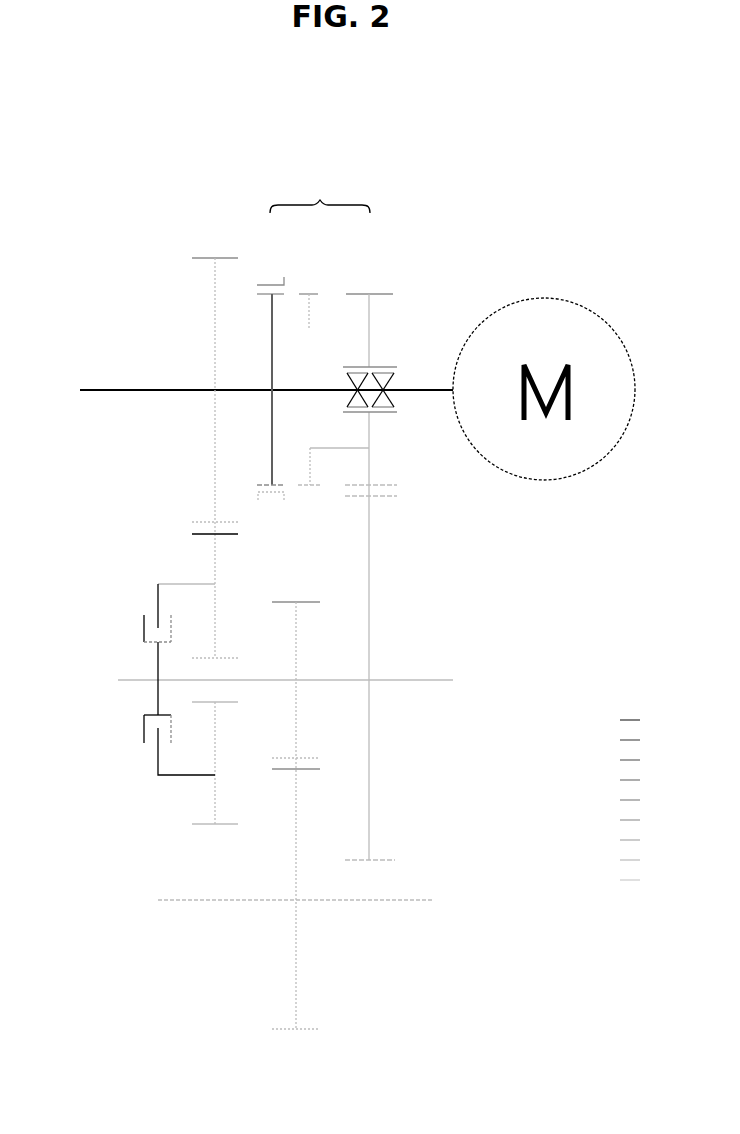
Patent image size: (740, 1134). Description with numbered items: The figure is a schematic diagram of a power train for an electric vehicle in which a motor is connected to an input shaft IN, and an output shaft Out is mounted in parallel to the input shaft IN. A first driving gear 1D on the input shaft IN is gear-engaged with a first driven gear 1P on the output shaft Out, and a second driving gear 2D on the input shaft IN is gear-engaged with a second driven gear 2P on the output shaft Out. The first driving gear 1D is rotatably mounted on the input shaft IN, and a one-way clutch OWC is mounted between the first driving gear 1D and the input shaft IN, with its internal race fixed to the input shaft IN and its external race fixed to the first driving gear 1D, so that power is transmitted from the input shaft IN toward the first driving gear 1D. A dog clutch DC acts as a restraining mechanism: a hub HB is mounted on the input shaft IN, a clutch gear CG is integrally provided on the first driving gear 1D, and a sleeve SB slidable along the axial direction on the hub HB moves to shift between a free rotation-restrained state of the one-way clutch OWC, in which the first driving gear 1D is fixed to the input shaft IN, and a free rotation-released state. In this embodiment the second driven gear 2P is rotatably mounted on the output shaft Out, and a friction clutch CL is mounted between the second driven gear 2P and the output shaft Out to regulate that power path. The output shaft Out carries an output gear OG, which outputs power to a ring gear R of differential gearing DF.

The input shaft IN is at (98, 391).
The output shaft Out is at (433, 682).
The second driving gear 2D is at (203, 258).
The second driven gear 2P is at (205, 826).
The friction clutch CL is at (138, 722).
The dog clutch DC is at (313, 340).
The sleeve SB is at (258, 283).
The hub HB is at (271, 341).
The clutch gear CG is at (315, 290).
The first driving gear 1D is at (381, 294).
The one-way clutch OWC is at (394, 422).
The output gear OG is at (302, 602).
The first driven gear 1P is at (378, 862).
The differential gearing DF is at (310, 915).
The ring gear R is at (302, 1031).